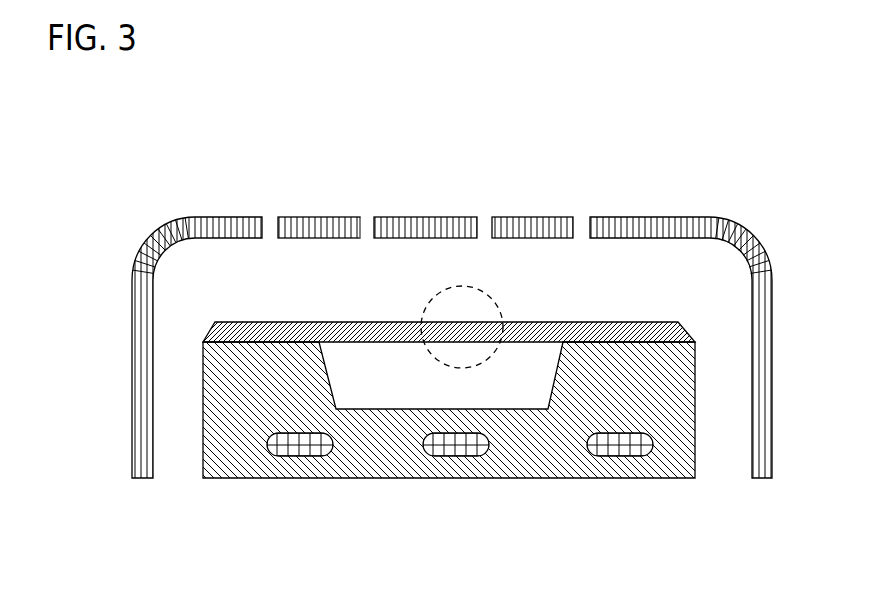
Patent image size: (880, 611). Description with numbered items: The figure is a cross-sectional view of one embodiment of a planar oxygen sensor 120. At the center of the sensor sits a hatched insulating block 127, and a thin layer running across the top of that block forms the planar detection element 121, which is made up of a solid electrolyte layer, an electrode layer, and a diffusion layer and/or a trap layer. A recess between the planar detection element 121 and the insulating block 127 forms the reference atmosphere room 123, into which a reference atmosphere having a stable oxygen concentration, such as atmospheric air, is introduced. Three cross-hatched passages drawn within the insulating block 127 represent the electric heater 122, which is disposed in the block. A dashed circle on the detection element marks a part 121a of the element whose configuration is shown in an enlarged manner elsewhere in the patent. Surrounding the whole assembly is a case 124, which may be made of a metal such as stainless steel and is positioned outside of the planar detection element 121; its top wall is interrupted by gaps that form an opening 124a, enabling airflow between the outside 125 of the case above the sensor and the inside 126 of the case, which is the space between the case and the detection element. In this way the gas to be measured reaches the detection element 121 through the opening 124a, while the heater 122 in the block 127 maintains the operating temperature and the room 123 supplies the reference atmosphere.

The planar oxygen sensor 120 is at (478, 299).
The planar detection element 121 is at (514, 358).
The part of the detection element 121a is at (485, 292).
The electric heater 122 is at (612, 450).
The reference atmosphere room 123 is at (355, 392).
The case 124 is at (218, 225).
The opening 124a is at (368, 223).
The outside of the case 125 is at (412, 92).
The inside of the case 126 is at (378, 301).
The insulating block 127 is at (230, 472).